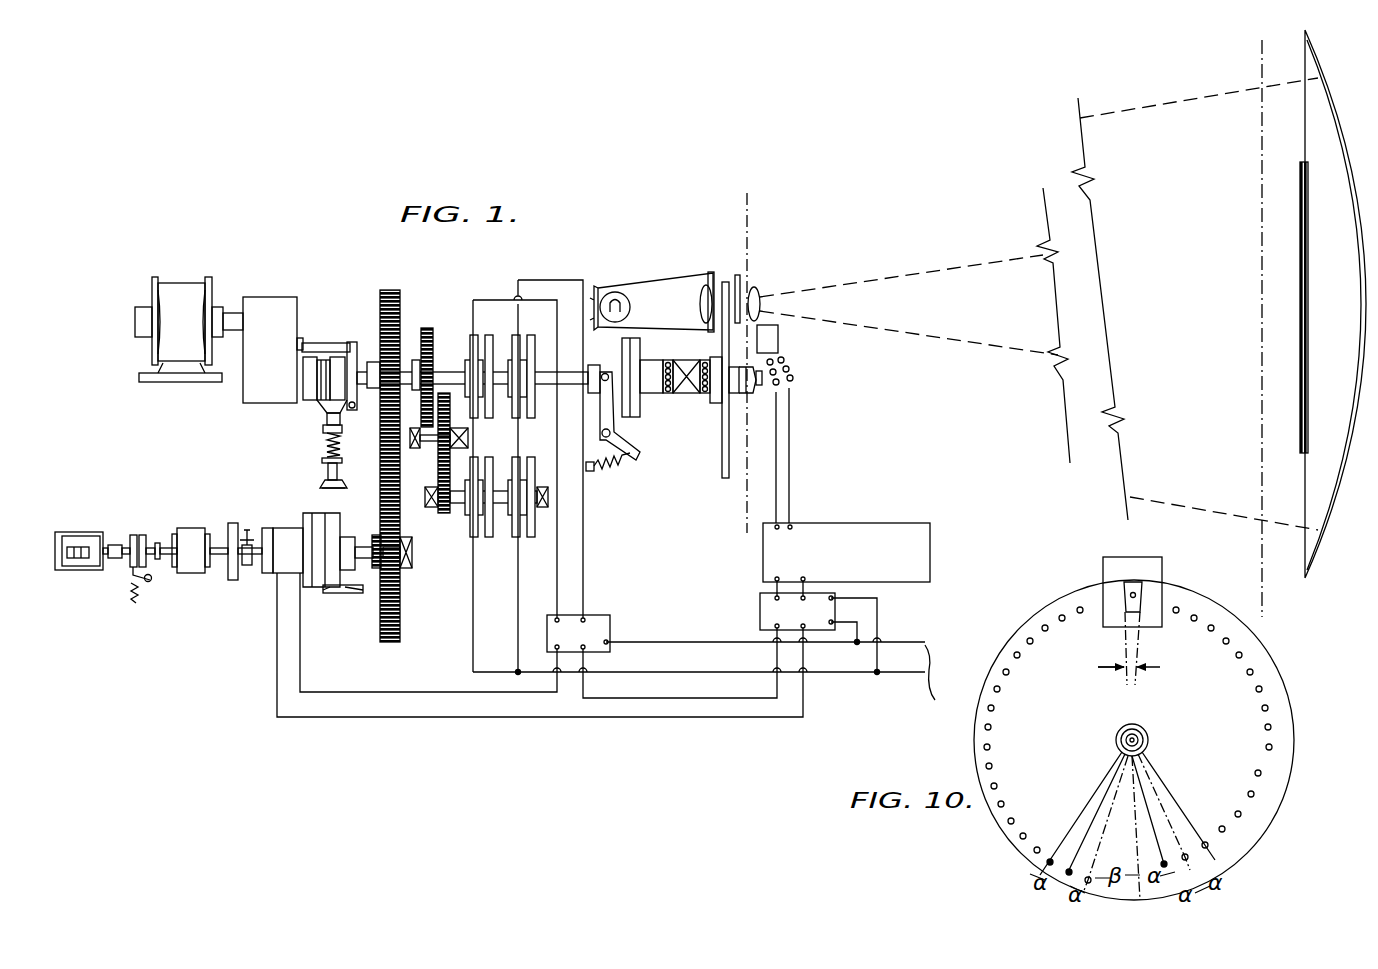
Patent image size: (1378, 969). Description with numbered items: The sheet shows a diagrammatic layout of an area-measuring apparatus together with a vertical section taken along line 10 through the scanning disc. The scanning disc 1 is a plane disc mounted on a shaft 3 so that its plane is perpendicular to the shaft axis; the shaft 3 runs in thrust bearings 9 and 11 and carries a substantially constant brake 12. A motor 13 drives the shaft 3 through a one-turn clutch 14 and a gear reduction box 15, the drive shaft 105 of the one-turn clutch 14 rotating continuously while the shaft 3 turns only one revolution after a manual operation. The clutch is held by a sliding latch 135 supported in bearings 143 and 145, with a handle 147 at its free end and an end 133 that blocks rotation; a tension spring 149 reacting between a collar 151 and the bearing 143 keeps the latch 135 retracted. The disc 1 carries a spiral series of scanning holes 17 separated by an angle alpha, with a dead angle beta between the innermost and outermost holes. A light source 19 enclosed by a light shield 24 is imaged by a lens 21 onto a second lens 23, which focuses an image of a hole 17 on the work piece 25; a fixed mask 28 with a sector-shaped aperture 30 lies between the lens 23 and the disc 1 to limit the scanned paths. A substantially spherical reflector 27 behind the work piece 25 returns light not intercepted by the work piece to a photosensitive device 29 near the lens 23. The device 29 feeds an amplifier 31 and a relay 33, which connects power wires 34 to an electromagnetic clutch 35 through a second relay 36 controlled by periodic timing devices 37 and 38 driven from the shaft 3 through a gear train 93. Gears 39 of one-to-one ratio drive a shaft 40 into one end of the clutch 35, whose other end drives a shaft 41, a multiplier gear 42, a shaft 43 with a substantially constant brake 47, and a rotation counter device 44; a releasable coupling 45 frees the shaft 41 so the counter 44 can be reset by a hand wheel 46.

In FIG. 1, the scanning disc 1 is at (720, 477).
In FIG. 10, the scanning disc 1 is at (1275, 667).
In FIG. 1, the shaft 3 is at (363, 368).
In FIG. 10, the shaft 3 is at (1147, 730).
In FIG. 1, the thrust bearing 9 is at (707, 403).
In FIG. 1, the section line 10— 10 is at (718, 193).
In FIG. 1, the thrust bearing 11 is at (663, 400).
In FIG. 1, the substantially constant brake 12 is at (632, 418).
In FIG. 1, the motor 13 is at (147, 347).
In FIG. 1, the one-turn clutch 14 is at (320, 363).
In FIG. 1, the gear reduction box 15 is at (270, 303).
In FIG. 10, the scanning holes 17 is at (1133, 595).
In FIG. 1, the light source 19 is at (612, 293).
In FIG. 1, the lens 21 is at (703, 292).
In FIG. 1, the second lens 23 is at (753, 287).
In FIG. 1, the light shield 24 is at (632, 285).
In FIG. 1, the work piece 25 is at (1302, 205).
In FIG. 1, the reflector 27 is at (1357, 327).
In FIG. 1, the mask 28 is at (737, 273).
In FIG. 10, the mask 28 is at (1103, 570).
In FIG. 1, the photosensitive device 29 is at (777, 347).
In FIG. 10, the sector-shaped aperture 30 is at (1122, 608).
In FIG. 1, the amplifier 31 is at (862, 537).
In FIG. 1, the relay 33 is at (760, 612).
In FIG. 1, the power wires 34 is at (925, 688).
In FIG. 1, the electromagnetic clutch 35 is at (285, 538).
In FIG. 1, the second relay 36 is at (598, 617).
In FIG. 1, the periodic timing device 37 is at (485, 542).
In FIG. 1, the periodic timing device 38 is at (532, 542).
In FIG. 1, the gears 39 is at (397, 450).
In FIG. 1, the shaft 40 is at (365, 545).
In FIG. 1, the shaft 41 is at (258, 542).
In FIG. 1, the multiplier gear 42 is at (195, 532).
In FIG. 1, the shaft 43 is at (162, 542).
In FIG. 1, the rotation counter device 44 is at (77, 538).
In FIG. 1, the releasable coupling 45 is at (247, 568).
In FIG. 1, the hand wheel 46 is at (233, 577).
In FIG. 1, the substantially constant brake 47 is at (140, 537).
In FIG. 1, the gear train 93 is at (452, 478).
In FIG. 1, the drive shaft 105 is at (303, 377).
In FIG. 1, the end of latch 133 is at (317, 410).
In FIG. 1, the sliding latch 135 is at (323, 470).
In FIG. 1, the bearing 143 is at (340, 467).
In FIG. 1, the bearing 145 is at (340, 430).
In FIG. 1, the handle 147 is at (320, 482).
In FIG. 1, the tension spring 149 is at (327, 443).
In FIG. 1, the collar 151 is at (337, 437).